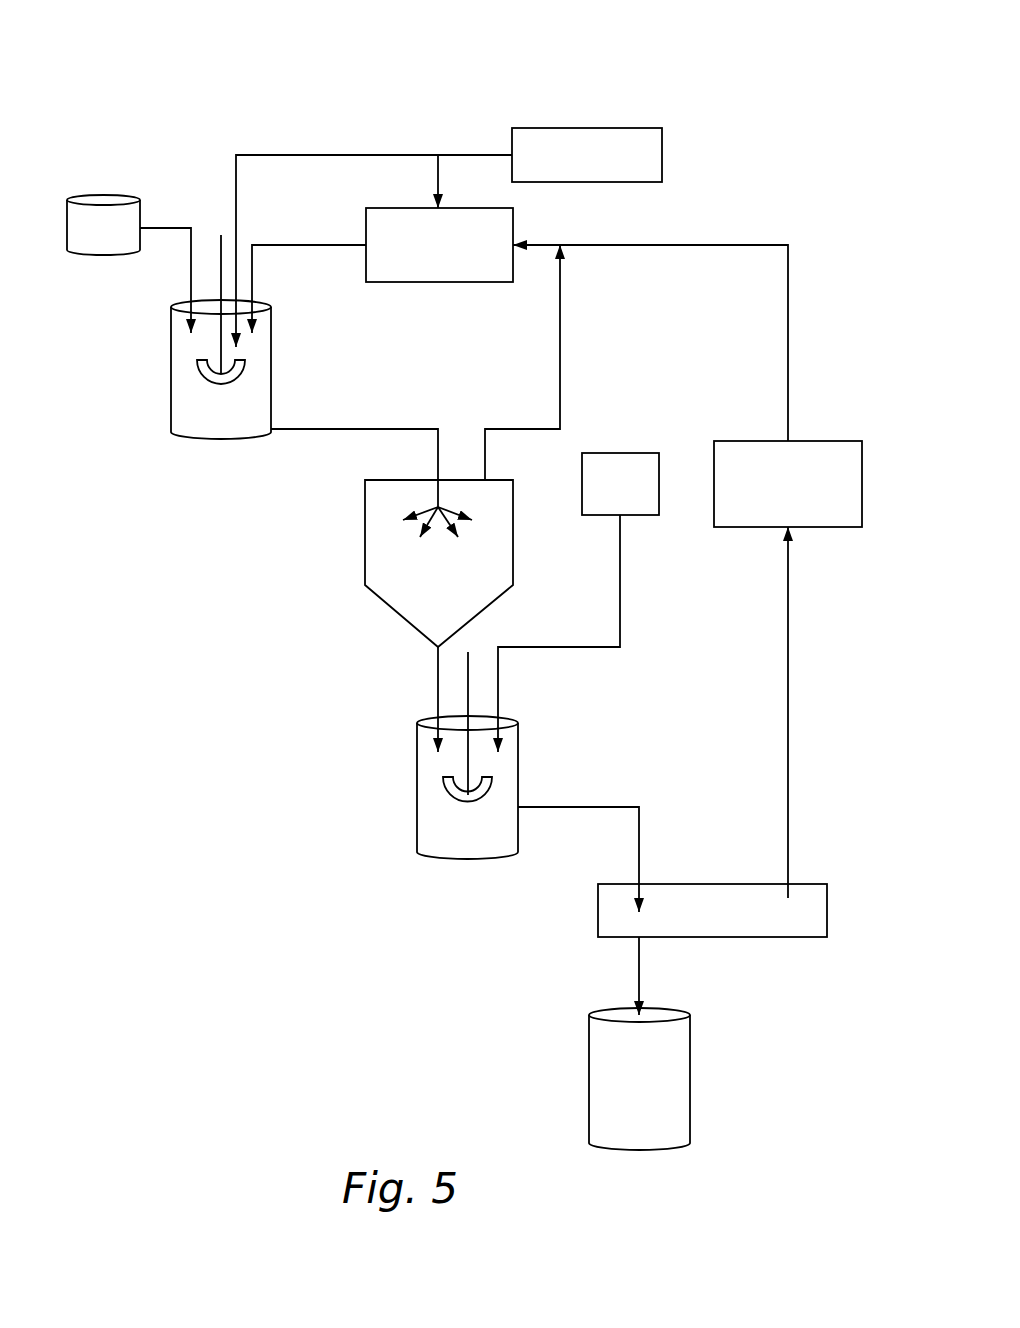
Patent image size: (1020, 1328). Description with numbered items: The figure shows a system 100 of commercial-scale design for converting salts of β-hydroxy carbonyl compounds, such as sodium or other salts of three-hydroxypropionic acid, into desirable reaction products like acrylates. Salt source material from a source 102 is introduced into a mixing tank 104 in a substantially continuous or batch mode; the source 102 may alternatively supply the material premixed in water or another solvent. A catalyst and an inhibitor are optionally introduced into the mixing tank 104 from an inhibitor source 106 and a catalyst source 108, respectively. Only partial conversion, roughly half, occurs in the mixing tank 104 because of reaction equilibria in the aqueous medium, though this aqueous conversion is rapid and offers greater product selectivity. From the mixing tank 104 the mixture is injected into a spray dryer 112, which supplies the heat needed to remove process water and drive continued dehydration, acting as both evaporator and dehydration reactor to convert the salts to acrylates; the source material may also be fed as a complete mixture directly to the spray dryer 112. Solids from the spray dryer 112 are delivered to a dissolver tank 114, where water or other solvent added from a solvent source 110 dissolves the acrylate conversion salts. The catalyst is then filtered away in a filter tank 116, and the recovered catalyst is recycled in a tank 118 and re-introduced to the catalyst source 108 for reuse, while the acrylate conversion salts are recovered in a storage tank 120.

The system 100 is at (720, 85).
The source 102 is at (80, 242).
The mixing tank 104 is at (197, 426).
The inhibitor source 106 is at (563, 168).
The catalyst source 108 is at (416, 258).
The solvent source 110 is at (596, 495).
The spray dryer 112 is at (414, 595).
The dissolver tank 114 is at (443, 843).
The filter tank 116 is at (688, 923).
The tank 118 is at (764, 496).
The storage tank 120 is at (615, 1093).